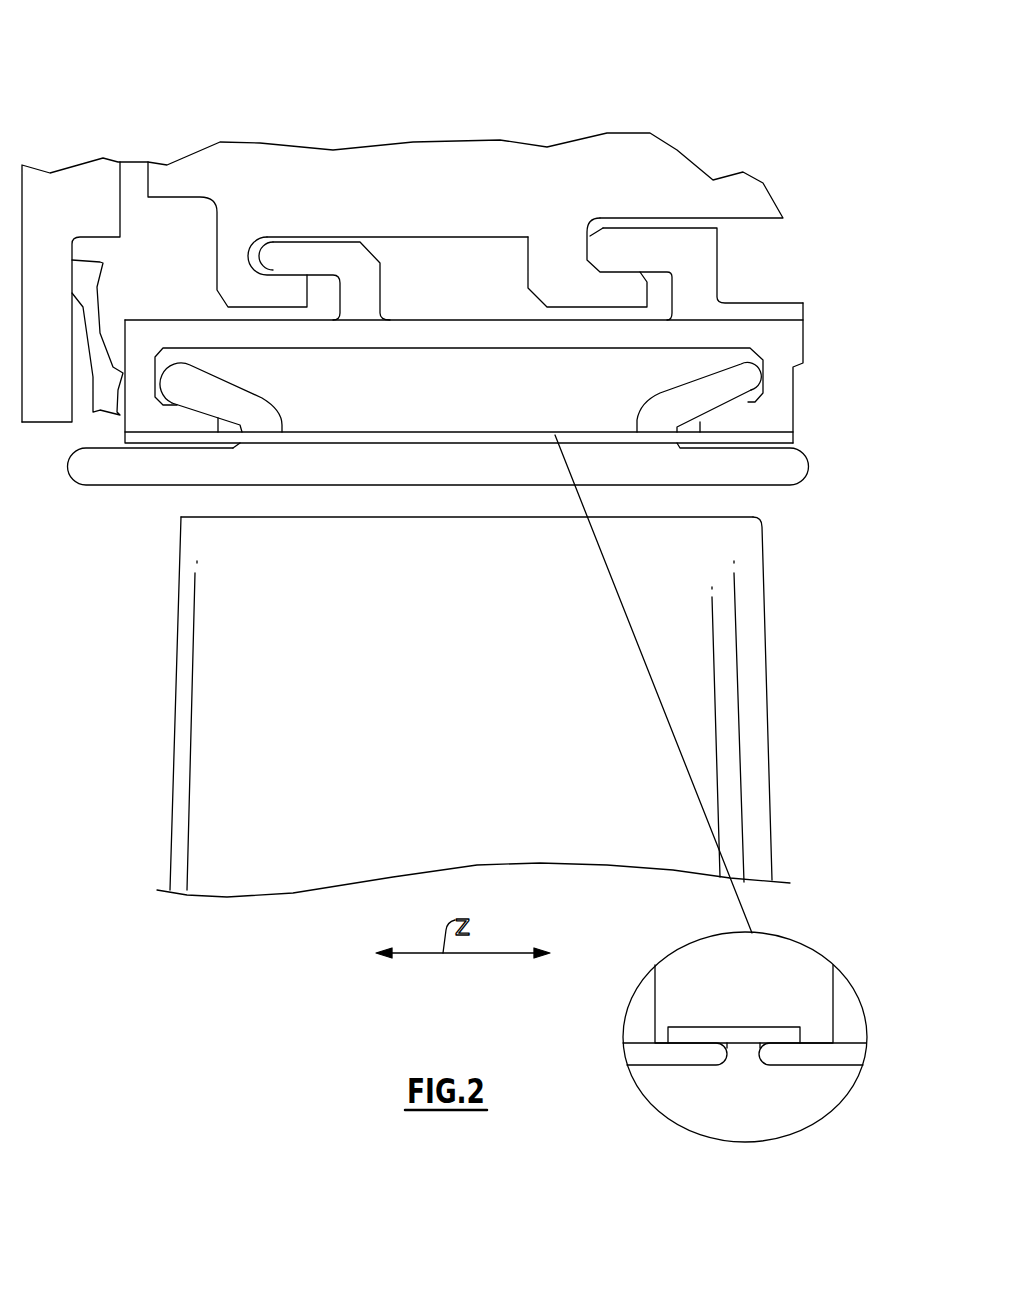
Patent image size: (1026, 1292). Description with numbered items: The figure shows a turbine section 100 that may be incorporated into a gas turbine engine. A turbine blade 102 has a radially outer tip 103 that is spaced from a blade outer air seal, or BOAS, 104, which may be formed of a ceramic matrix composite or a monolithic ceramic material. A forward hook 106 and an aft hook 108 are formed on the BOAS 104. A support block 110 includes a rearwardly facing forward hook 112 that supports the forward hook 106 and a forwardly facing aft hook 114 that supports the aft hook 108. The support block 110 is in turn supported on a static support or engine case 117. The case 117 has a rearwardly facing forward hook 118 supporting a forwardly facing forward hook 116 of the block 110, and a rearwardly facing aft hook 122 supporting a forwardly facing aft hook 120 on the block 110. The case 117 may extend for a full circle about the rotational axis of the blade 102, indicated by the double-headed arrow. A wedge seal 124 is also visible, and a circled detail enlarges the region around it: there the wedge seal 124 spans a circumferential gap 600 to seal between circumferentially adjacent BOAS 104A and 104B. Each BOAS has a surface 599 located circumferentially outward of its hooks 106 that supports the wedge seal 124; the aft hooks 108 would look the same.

The turbine section 100 is at (190, 66).
The turbine blade 102 is at (173, 723).
The radially outer tip 103 is at (193, 513).
The blade outer air seal 104 is at (85, 475).
The blade outer air seal 104A is at (643, 1053).
The blade outer air seal 104B is at (847, 1053).
The forward hook 106 is at (195, 383).
The aft hook 108 is at (702, 393).
The support block 110 is at (455, 333).
The rearwardly facing forward hook 112 is at (160, 418).
The forwardly facing aft hook 114 is at (783, 417).
The forwardly facing forward hook 116 is at (310, 257).
The engine case 117 is at (367, 193).
The rearwardly facing forward hook 118 is at (257, 293).
The forwardly facing aft hook 120 is at (638, 247).
The rearwardly facing aft hook 122 is at (567, 270).
The wedge seal 124 is at (427, 438).
The surface 599 is at (683, 1055).
The circumferential gap 600 is at (740, 1057).